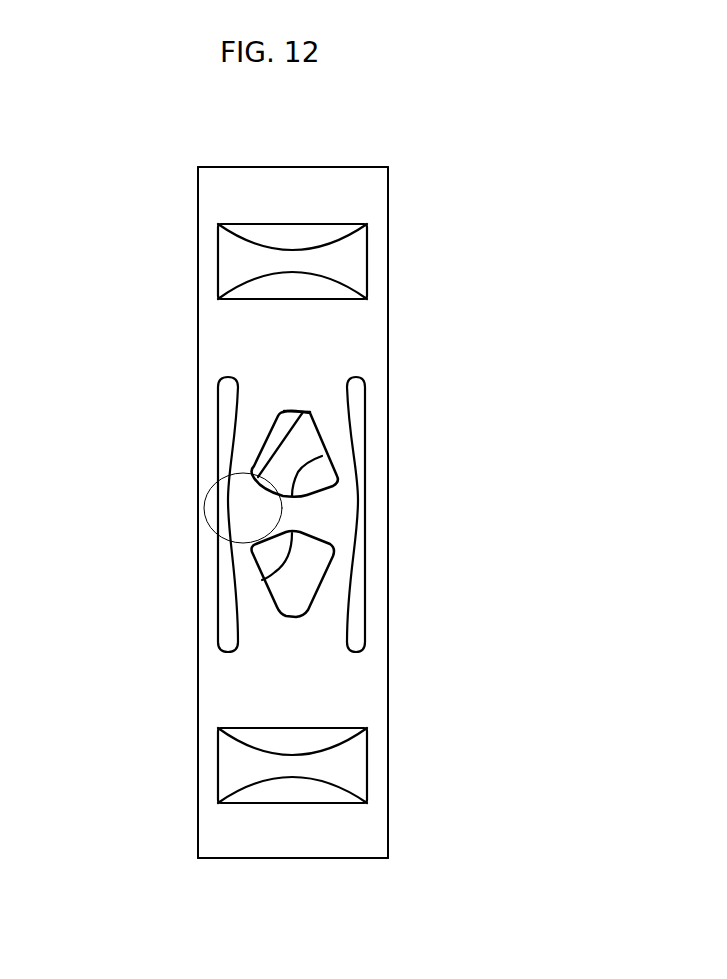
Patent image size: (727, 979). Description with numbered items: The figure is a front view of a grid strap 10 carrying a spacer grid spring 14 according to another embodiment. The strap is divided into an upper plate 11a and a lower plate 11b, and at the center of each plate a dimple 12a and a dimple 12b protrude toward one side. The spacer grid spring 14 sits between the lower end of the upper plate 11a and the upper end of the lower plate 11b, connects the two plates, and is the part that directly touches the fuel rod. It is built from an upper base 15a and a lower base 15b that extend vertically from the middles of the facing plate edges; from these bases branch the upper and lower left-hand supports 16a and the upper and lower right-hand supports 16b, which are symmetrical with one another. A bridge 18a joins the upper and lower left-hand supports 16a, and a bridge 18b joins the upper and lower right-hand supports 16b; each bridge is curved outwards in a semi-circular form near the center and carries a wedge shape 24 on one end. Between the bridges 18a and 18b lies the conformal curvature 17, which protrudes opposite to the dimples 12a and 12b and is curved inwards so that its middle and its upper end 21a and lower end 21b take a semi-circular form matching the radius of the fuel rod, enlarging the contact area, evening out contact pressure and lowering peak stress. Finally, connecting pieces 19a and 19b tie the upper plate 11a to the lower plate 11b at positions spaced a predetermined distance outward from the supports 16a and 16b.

The grid strap 10 is at (458, 256).
The upper plate 11a is at (218, 193).
The lower plate 11b is at (350, 832).
The dimple 12a is at (310, 263).
The dimple 12b is at (293, 768).
The spacer grid spring 14 is at (360, 543).
The upper base 15a is at (270, 368).
The lower base 15b is at (292, 658).
The left-hand support 16a is at (252, 447).
The right-hand support 16b is at (343, 468).
The conformal curvature 17 is at (293, 517).
The bridge 18a is at (247, 513).
The bridge 18b is at (348, 525).
The connecting piece 19a is at (247, 508).
The connecting piece 19b is at (385, 585).
The upper end of conformal curvature 21a is at (338, 452).
The lower end of conformal curvature 21b is at (262, 580).
The wedge shape 24 is at (298, 417).